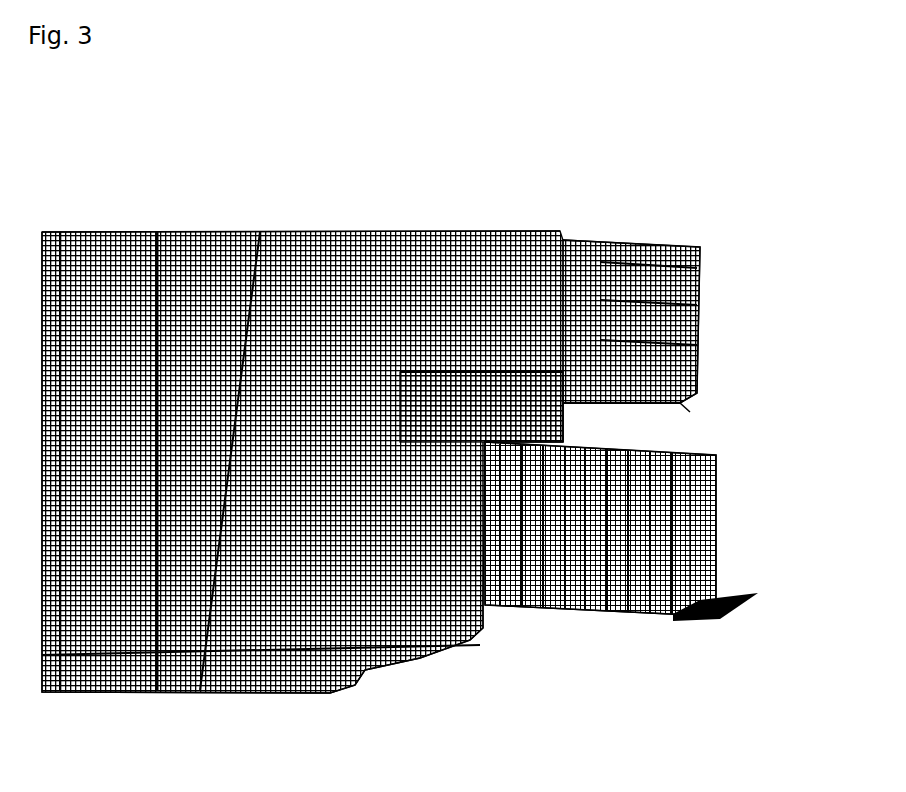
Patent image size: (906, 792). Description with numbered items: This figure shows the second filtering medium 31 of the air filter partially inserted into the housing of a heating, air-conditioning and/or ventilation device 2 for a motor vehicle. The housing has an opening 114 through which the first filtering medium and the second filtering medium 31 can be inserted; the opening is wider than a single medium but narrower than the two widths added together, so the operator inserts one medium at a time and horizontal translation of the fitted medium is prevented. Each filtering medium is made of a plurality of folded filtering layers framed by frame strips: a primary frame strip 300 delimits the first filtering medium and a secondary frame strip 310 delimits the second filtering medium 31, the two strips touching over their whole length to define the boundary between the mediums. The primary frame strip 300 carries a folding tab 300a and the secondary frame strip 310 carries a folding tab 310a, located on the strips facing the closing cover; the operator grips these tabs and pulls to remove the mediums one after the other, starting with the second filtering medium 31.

The heating, air-conditioning and/or ventilation device 2 is at (361, 222).
The primary frame strip 300 is at (525, 380).
The opening 114 is at (658, 255).
The folding tab 300a is at (567, 413).
The secondary frame strip 310 is at (640, 579).
The second filtering medium 31 is at (570, 590).
The folding tab 310a is at (694, 620).